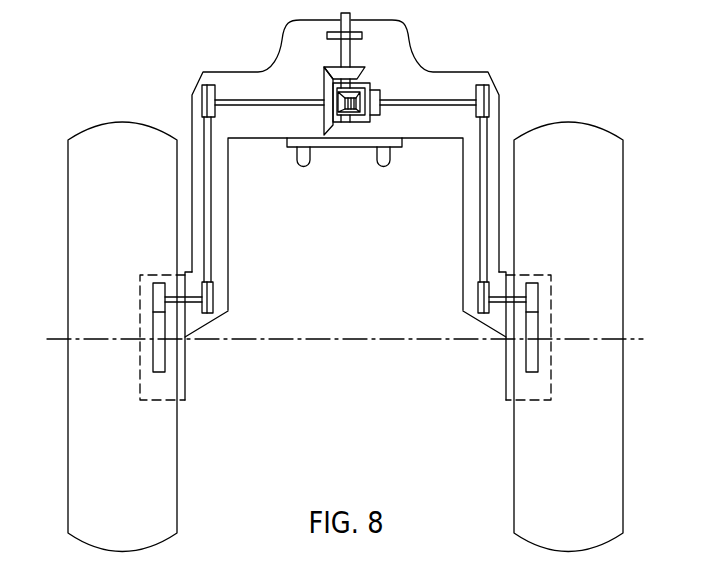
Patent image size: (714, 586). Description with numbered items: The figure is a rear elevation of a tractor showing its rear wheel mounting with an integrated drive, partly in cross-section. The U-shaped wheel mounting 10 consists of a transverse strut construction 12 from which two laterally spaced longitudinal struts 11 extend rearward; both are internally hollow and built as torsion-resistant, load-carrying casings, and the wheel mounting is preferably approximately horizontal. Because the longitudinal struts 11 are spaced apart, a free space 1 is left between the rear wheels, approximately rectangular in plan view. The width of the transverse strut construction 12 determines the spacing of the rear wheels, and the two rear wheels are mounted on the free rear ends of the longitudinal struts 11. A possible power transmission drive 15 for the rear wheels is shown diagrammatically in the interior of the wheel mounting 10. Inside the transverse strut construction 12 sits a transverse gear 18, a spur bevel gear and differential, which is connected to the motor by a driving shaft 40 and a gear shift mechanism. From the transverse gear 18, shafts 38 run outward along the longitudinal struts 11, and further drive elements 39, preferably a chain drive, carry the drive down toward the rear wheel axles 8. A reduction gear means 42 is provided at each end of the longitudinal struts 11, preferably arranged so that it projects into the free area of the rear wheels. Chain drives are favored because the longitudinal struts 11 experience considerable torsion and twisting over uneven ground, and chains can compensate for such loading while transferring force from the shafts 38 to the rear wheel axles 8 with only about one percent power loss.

The free space 1 is at (344, 290).
The rear wheel axle 8 is at (103, 337).
The wheel mounting 10 is at (212, 67).
The longitudinal strut 11 is at (228, 260).
The transverse strut construction 12 is at (248, 80).
The power transmission drive 15 is at (461, 88).
The transverse gear 18 is at (354, 134).
The shaft 38 is at (253, 106).
The drive element 39 is at (211, 215).
The driving shaft 40 is at (341, 49).
The reduction gear means 42 is at (158, 392).